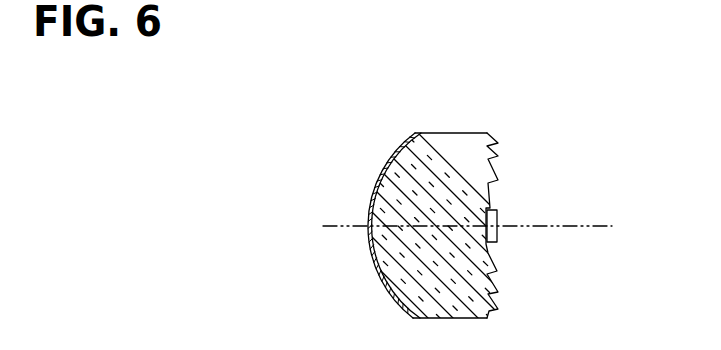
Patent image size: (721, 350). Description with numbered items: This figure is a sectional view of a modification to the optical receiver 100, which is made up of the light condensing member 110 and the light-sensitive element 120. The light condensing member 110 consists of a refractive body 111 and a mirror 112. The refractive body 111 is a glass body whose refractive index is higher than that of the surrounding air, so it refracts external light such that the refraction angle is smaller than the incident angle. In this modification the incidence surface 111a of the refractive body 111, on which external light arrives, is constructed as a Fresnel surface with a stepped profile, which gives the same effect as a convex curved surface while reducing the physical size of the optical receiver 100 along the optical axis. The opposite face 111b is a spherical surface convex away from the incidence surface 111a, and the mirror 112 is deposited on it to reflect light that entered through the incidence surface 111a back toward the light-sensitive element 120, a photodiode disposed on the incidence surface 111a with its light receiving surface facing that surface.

The optical receiver 100 is at (508, 125).
The light condensing member 110 is at (478, 78).
The refractive body 111 is at (447, 133).
The incidence surface 111a is at (497, 272).
The opposite face 111b is at (381, 243).
The mirror 112 is at (404, 133).
The light-sensitive element 120 is at (497, 213).